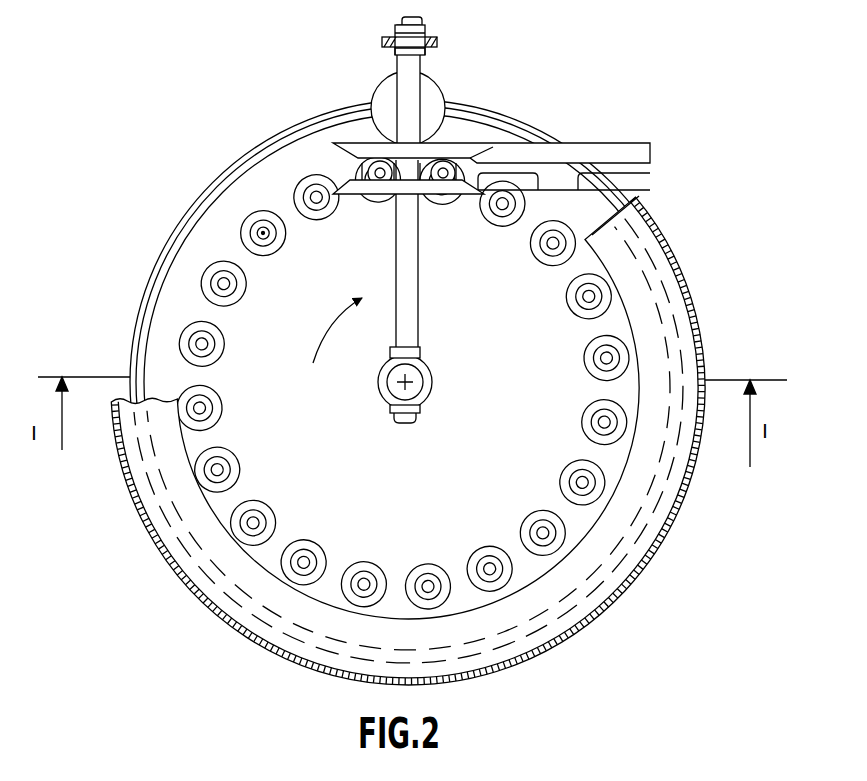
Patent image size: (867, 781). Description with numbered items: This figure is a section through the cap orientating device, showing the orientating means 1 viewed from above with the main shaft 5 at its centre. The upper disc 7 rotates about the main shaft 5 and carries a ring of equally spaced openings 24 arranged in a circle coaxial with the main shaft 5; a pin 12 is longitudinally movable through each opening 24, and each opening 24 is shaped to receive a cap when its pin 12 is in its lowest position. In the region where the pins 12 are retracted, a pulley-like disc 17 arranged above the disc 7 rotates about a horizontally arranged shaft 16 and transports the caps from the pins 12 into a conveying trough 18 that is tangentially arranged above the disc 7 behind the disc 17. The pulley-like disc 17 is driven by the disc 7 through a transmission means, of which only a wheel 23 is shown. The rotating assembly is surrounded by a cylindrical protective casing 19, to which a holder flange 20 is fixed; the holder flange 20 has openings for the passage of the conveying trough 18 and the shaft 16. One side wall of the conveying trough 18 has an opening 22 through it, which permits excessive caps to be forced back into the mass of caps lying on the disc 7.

The orientating means 1 is at (389, 373).
The main shaft 5 is at (427, 388).
The disc 7 is at (238, 184).
The pin 12 is at (266, 237).
The shaft 16 is at (412, 268).
The pulley-like disc 17 is at (473, 197).
The conveying trough 18 is at (584, 145).
The cylindrical protective casing 19 is at (140, 303).
The holder flange 20 is at (120, 462).
The opening 22 is at (558, 193).
The wheel 23 is at (430, 95).
The openings 24 is at (247, 296).